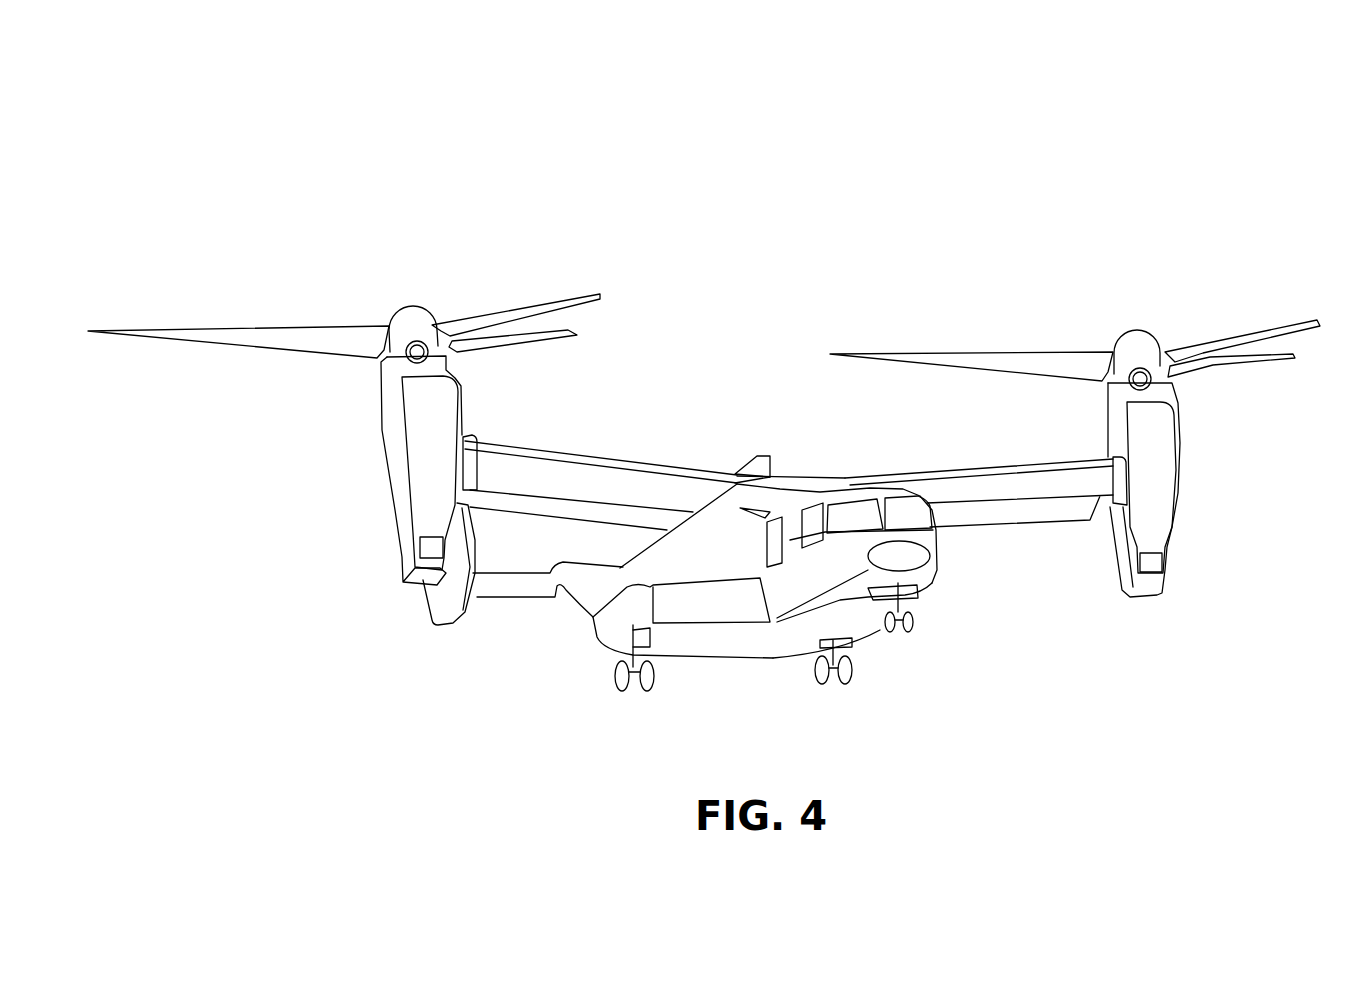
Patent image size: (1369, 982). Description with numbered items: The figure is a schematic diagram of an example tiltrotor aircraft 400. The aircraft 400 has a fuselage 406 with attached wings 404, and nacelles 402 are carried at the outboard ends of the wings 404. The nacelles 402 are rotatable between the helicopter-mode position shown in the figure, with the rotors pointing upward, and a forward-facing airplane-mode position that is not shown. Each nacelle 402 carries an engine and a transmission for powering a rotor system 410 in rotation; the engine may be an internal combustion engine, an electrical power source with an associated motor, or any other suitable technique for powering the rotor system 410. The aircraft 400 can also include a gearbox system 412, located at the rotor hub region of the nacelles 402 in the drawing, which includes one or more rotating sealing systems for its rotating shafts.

The tiltrotor aircraft 400 is at (142, 118).
The nacelles 402 is at (358, 500).
The wings 404 is at (587, 455).
The fuselage 406 is at (935, 585).
The rotor systems 410 is at (540, 303).
The gearbox system 412 is at (407, 360).